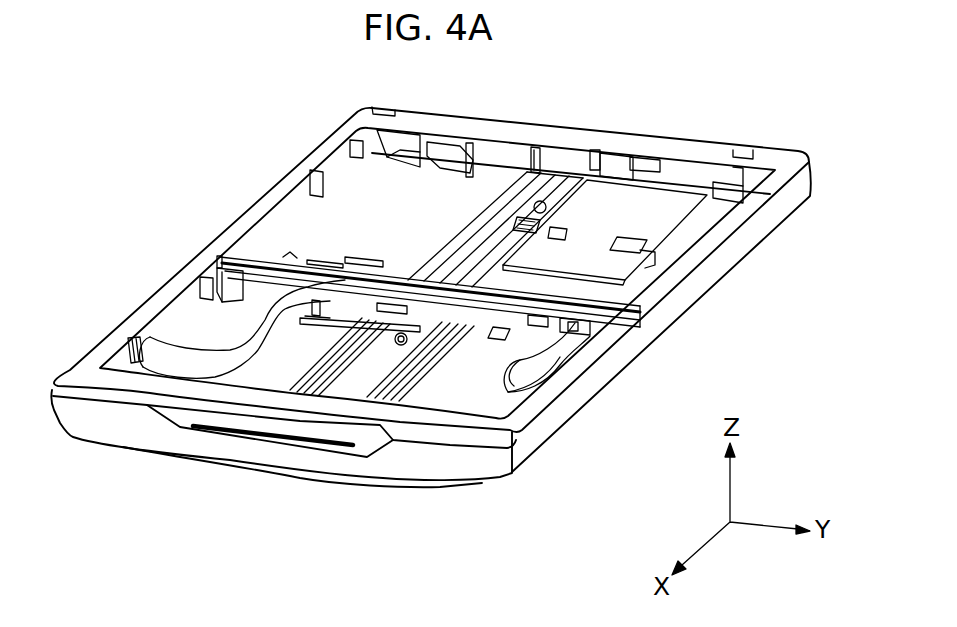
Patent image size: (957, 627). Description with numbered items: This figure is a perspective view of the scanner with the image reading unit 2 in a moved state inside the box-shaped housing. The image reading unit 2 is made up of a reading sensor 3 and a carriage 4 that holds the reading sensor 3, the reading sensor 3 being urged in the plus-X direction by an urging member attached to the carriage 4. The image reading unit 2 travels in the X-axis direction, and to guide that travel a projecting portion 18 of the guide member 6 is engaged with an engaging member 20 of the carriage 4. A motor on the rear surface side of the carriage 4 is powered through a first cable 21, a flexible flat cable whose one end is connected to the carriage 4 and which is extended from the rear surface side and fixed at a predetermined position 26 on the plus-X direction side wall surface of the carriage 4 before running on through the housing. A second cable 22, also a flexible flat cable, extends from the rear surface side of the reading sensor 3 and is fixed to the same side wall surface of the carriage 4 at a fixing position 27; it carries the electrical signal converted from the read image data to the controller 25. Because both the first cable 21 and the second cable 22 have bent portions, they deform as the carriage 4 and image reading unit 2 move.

The image reading unit 2 is at (261, 252).
The reading sensor 3 is at (410, 278).
The carriage 4 is at (222, 258).
The guide member 6 is at (430, 297).
The projecting portion 18 is at (540, 174).
The engaging member 20 is at (400, 346).
The first cable 21 is at (572, 342).
The second cable 22 is at (192, 350).
The controller 25 is at (650, 220).
The position 26 is at (537, 323).
The fixing position 27 is at (321, 330).